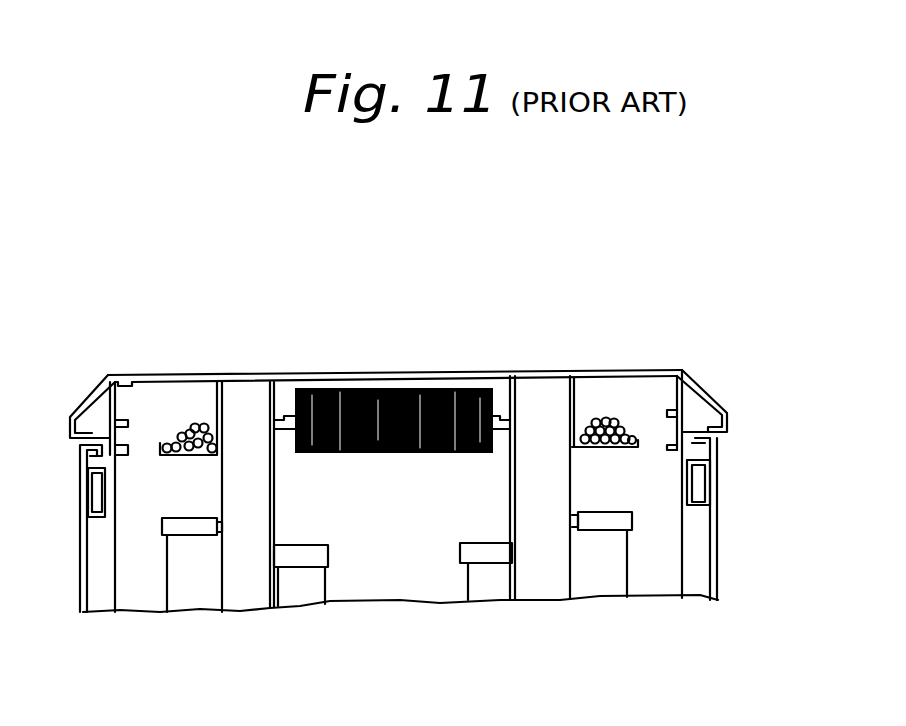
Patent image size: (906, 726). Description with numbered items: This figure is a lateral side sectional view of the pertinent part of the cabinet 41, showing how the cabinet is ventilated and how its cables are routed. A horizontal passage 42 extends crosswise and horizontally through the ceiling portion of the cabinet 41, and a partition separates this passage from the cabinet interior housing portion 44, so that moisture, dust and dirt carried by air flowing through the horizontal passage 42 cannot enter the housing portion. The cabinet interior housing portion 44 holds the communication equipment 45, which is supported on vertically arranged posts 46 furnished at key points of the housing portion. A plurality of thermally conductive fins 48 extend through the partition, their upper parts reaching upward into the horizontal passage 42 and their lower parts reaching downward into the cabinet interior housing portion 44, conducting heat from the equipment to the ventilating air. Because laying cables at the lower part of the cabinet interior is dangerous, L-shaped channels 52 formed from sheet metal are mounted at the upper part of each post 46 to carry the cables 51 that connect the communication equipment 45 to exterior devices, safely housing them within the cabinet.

The cabinet 41 is at (730, 482).
The horizontal passage 42 is at (289, 384).
The cabinet interior housing portion 44 is at (138, 585).
The communication equipment 45 is at (193, 578).
The post 46 is at (250, 585).
The fin 48 is at (357, 468).
The cable 51 is at (188, 402).
The L-shaped channel 52 is at (168, 458).